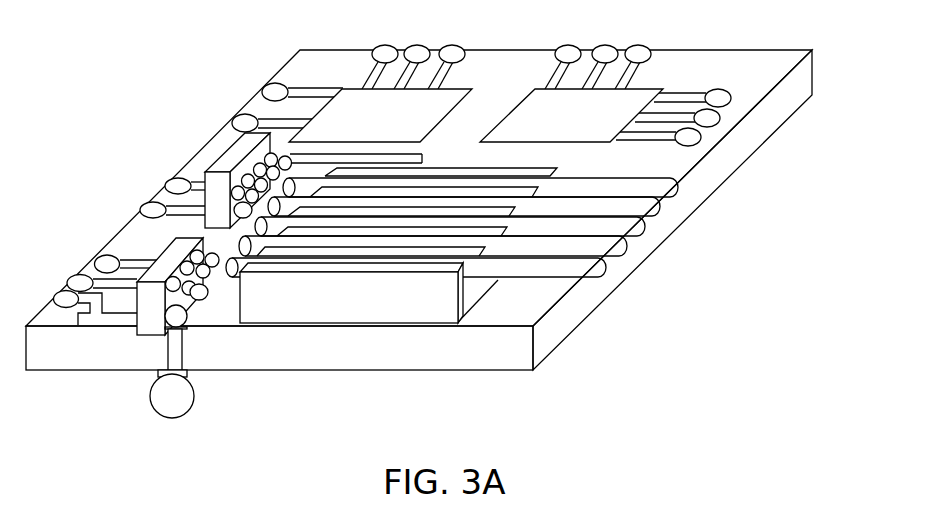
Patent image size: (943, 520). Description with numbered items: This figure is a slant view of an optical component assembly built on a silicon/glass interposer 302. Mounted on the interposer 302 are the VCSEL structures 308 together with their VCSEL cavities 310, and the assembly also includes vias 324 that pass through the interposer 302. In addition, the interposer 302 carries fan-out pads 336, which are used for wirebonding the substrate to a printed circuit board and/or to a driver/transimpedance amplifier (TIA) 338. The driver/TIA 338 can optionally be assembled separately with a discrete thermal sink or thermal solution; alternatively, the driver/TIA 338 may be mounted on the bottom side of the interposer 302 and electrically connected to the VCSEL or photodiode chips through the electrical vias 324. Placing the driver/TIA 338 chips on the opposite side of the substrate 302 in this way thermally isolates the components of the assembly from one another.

The silicon/glass interposer 302 is at (812, 75).
The VCSEL structure 308 is at (215, 182).
The VCSEL cavity 310 is at (188, 300).
The via 324 is at (182, 340).
The fan-out pad 336 is at (718, 98).
The driver/transimpedance amplifier (TIA) 338 is at (353, 103).